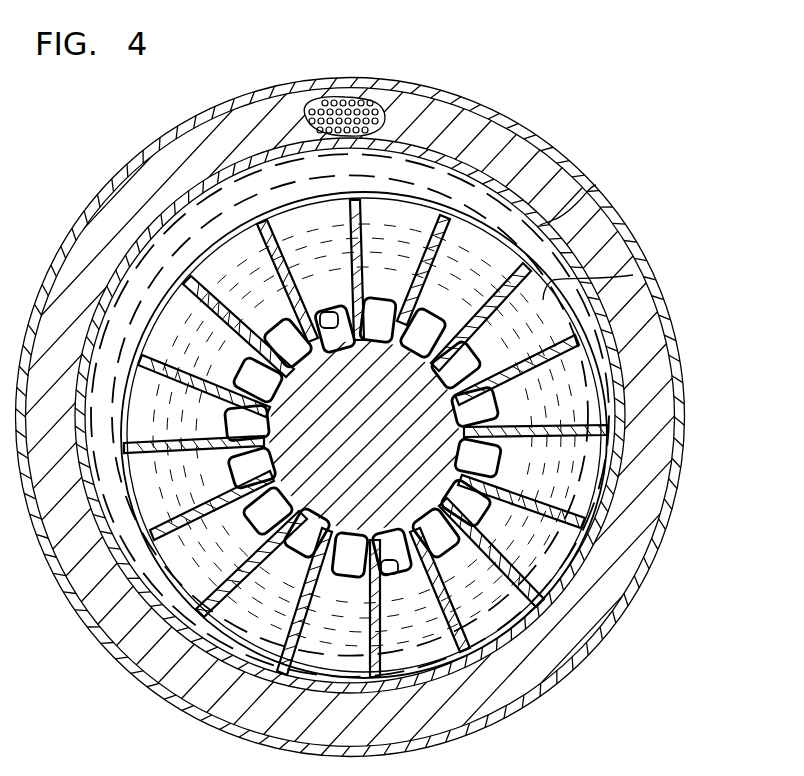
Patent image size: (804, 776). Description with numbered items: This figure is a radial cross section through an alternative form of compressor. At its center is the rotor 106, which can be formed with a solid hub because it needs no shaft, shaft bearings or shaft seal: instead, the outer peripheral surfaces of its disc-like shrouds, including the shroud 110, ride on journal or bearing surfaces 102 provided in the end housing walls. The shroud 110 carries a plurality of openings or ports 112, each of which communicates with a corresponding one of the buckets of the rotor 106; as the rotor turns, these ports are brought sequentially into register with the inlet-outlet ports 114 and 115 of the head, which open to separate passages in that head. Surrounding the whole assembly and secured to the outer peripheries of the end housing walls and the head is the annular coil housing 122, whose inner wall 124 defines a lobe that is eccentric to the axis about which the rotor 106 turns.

The journal or bearing surfaces 102 is at (462, 218).
The rotor 106 is at (443, 277).
The disc-like shroud 110 is at (633, 275).
The openings or ports 112 is at (473, 362).
The inlet-outlet port 114 is at (337, 306).
The inlet-outlet port 115 is at (398, 578).
The annular coil housing 122 is at (676, 342).
The inner wall 124 is at (596, 185).